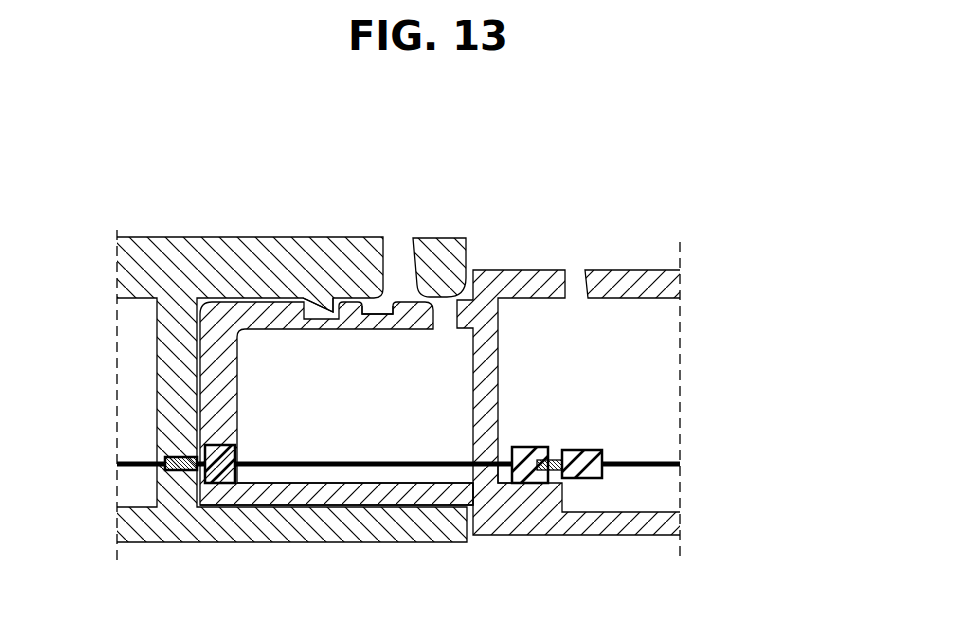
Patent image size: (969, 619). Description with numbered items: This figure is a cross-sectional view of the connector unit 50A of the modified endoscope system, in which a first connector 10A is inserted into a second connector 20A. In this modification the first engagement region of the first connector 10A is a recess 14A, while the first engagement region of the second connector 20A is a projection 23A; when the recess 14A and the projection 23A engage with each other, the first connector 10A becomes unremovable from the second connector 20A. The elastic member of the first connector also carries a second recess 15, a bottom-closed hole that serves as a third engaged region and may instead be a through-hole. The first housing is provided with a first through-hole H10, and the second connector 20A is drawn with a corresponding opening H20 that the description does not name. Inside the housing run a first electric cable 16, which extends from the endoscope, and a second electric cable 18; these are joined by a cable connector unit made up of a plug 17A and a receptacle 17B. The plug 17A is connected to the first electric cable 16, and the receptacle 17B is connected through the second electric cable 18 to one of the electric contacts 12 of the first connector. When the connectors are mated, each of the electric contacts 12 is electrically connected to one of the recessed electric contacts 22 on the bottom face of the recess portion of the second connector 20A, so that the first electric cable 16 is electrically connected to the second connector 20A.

The connector unit 50A is at (767, 145).
The second connector 20A is at (133, 192).
The first connector 10A is at (612, 198).
The recess 14A is at (330, 302).
The projection 23A is at (303, 306).
The second recess 15 is at (380, 300).
The second electric cable 18 is at (378, 505).
The electric contacts 12 is at (222, 485).
The electric contacts 22 is at (180, 472).
The first electric cable 16 is at (660, 468).
The plug 17A is at (577, 480).
The receptacle 17B is at (540, 485).
The opening of second housing H20 is at (407, 232).
The first through-hole H10 is at (585, 265).